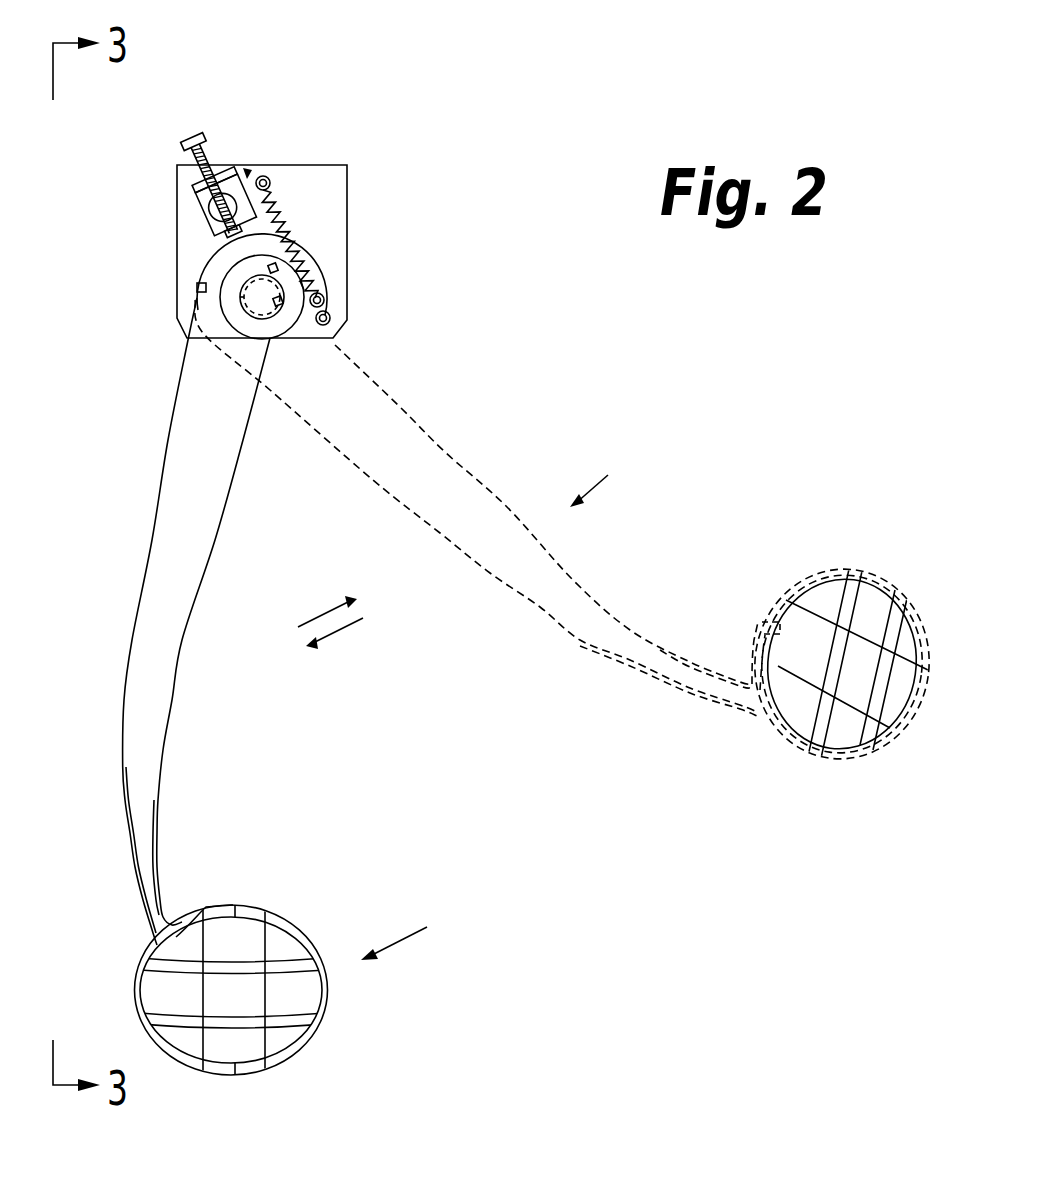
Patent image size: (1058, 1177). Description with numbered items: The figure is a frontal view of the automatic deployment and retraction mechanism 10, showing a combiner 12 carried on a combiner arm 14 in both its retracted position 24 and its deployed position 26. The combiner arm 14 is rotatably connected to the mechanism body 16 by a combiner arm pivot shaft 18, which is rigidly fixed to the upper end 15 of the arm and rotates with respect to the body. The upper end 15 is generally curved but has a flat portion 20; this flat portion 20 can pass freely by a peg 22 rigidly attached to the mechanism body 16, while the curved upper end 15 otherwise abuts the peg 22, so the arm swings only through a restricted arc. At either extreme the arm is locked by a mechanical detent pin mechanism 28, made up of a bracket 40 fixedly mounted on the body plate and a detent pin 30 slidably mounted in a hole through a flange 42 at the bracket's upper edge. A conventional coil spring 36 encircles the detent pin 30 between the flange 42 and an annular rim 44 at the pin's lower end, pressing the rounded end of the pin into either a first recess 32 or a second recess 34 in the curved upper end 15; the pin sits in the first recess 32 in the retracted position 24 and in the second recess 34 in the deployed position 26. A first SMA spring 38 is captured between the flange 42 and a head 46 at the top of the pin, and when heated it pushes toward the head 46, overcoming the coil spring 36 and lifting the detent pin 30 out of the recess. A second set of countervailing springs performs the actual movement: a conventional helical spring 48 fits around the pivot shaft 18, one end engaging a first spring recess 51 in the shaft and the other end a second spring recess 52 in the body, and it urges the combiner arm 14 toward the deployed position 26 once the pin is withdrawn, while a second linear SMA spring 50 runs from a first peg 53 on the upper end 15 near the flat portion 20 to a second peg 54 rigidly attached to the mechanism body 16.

The automatic deployment and retraction mechanism 10 is at (515, 36).
The combiner 12 is at (887, 578).
The combiner arm 14 is at (157, 723).
The upper end 15 is at (300, 263).
The mechanism body 16 is at (333, 243).
The combiner arm pivot shaft 18 is at (262, 306).
The flat portion 20 is at (331, 338).
The peg 22 is at (329, 318).
The retracted position 24 is at (605, 481).
The deployed position 26 is at (409, 934).
The detent pin mechanism 28 is at (260, 168).
The detent pin 30 is at (203, 170).
The first recess 32 is at (262, 233).
The second recess 34 is at (200, 288).
The coil spring 36 is at (248, 176).
The first SMA spring 38 is at (196, 158).
The bracket 40 is at (210, 213).
The flange 42 is at (200, 192).
The annular rim 44 is at (235, 234).
The head 46 is at (197, 137).
The helical spring 48 is at (247, 302).
The second SMA spring 50 is at (281, 219).
The first spring recess 51 is at (280, 306).
The second spring recess 52 is at (278, 266).
The first peg 53 is at (322, 299).
The second peg 54 is at (269, 184).